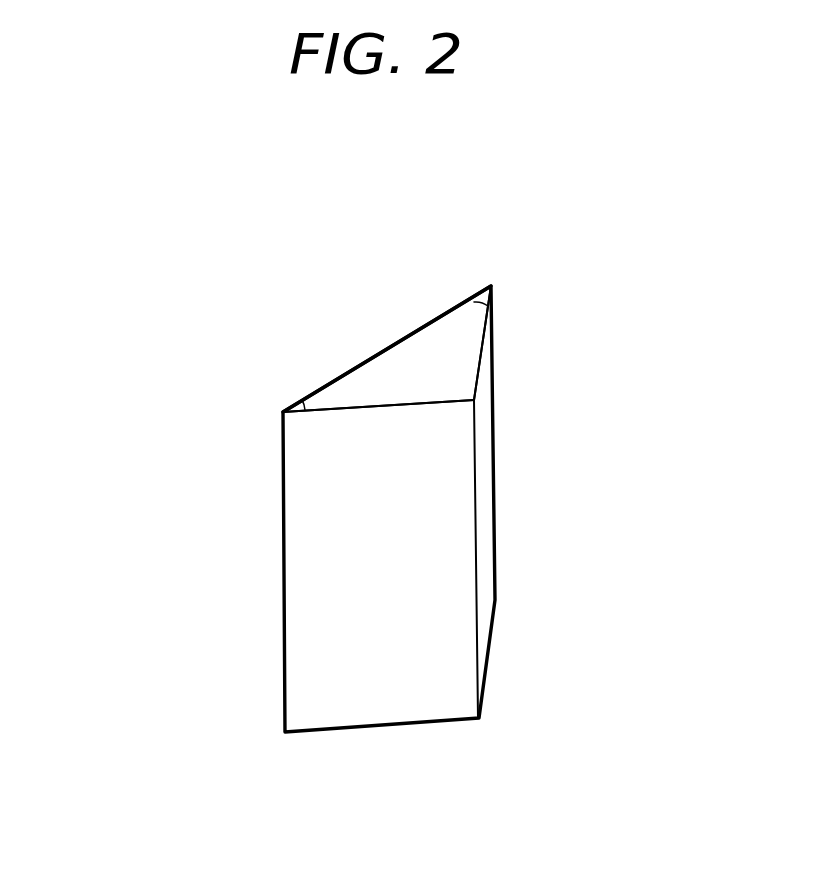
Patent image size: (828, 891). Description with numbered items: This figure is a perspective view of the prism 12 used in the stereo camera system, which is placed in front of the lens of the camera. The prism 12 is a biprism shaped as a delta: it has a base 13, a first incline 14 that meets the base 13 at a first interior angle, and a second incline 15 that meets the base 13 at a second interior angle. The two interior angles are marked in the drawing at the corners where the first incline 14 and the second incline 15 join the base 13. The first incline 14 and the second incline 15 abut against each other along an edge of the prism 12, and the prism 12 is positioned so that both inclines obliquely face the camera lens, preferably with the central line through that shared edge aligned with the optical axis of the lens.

The prism 12 is at (541, 279).
The base 13 is at (387, 350).
The first incline 14 is at (486, 344).
The second incline 15 is at (377, 405).